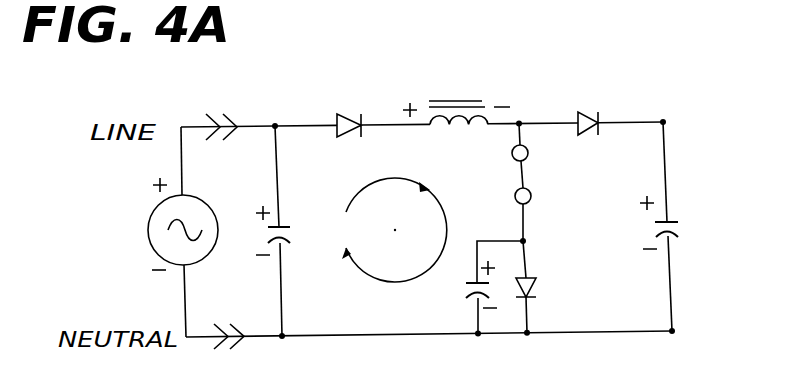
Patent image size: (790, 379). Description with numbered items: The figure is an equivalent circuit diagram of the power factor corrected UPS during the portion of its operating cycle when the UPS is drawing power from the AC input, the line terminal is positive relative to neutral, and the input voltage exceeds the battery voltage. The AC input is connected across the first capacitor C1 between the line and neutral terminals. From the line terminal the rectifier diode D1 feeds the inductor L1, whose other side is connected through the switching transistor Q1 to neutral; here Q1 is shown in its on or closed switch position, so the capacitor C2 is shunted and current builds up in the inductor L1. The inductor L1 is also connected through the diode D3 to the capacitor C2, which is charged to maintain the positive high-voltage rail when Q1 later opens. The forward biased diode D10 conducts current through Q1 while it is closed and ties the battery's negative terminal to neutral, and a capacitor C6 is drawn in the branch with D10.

The first capacitor C1 is at (290, 231).
The rectifier diode D1 is at (349, 111).
The inductor L1 is at (456, 101).
The diode D3 is at (588, 109).
The capacitor C2 is at (678, 222).
The switching transistor Q1 is at (505, 183).
The diode D10 is at (552, 287).
The capacitor C6 is at (475, 287).